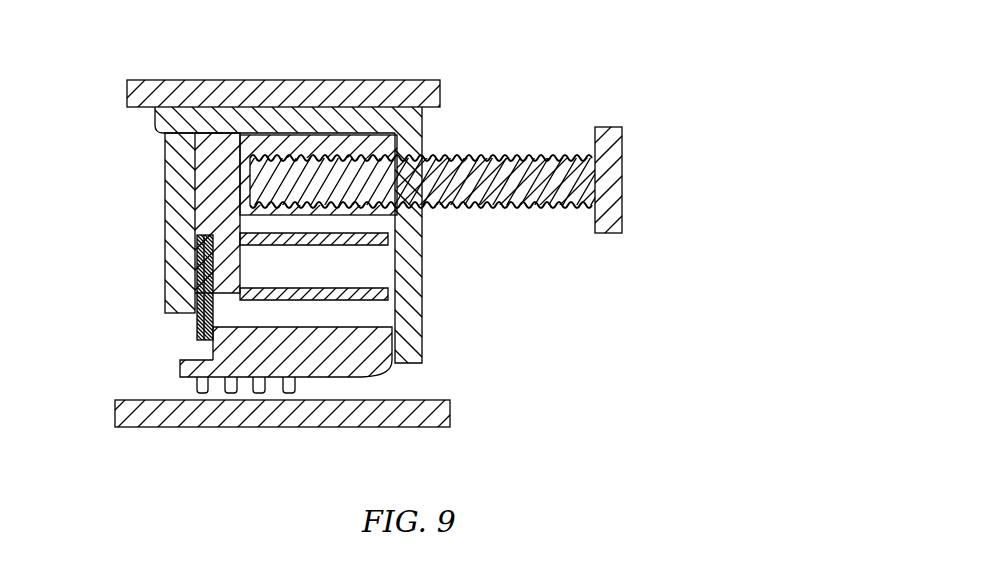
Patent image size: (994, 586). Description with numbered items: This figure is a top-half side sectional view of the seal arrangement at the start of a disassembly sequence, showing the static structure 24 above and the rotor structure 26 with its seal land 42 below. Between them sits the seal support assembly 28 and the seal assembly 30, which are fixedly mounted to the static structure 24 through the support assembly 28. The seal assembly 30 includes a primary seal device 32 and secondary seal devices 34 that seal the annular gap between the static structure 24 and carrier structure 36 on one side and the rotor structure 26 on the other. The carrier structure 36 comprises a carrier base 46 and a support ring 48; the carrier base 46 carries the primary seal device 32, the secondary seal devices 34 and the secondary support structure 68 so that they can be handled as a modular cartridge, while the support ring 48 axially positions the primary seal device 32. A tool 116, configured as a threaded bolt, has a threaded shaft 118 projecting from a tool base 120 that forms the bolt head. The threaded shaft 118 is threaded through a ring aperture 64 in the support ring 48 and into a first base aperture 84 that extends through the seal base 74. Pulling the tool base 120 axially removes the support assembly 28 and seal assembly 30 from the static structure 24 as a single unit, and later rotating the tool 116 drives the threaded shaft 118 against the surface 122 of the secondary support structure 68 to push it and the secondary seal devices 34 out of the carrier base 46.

The static structure 24 is at (405, 223).
The carrier structure 36 is at (405, 223).
The carrier base 46 is at (295, 107).
The seal base 74 is at (262, 138).
The surface 122 is at (240, 161).
The seal support assembly 28 is at (335, 235).
The secondary support structure 68 is at (147, 277).
The secondary seal device 34 is at (184, 329).
The primary seal device 32 is at (168, 362).
The seal assembly 30 is at (332, 394).
The first base aperture 84 is at (380, 212).
The ring aperture 64 is at (335, 235).
The support ring 48 is at (422, 338).
The tool 116 is at (470, 170).
The threaded shaft 118 is at (553, 206).
The tool base 120 is at (610, 233).
The rotor structure 26 is at (405, 252).
The seal land 42 is at (450, 417).